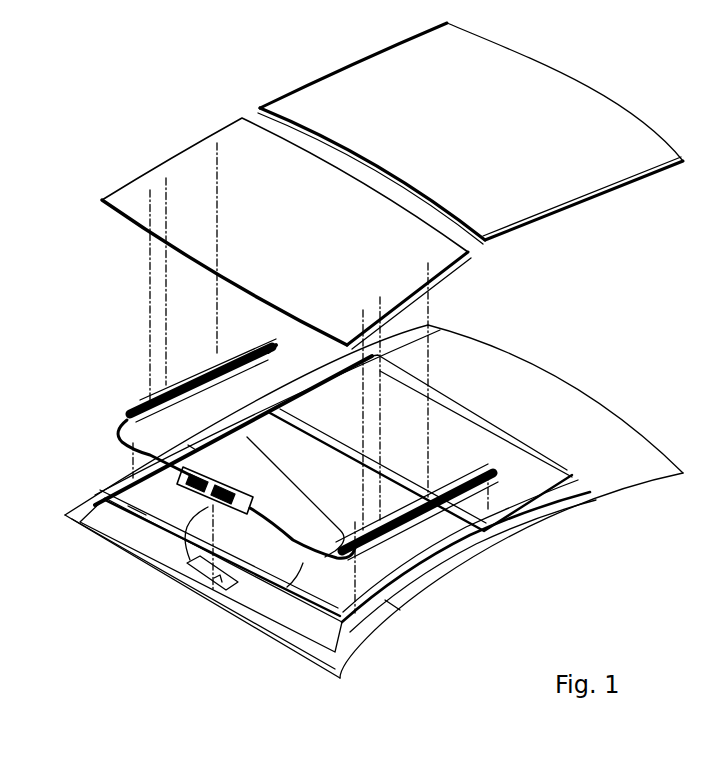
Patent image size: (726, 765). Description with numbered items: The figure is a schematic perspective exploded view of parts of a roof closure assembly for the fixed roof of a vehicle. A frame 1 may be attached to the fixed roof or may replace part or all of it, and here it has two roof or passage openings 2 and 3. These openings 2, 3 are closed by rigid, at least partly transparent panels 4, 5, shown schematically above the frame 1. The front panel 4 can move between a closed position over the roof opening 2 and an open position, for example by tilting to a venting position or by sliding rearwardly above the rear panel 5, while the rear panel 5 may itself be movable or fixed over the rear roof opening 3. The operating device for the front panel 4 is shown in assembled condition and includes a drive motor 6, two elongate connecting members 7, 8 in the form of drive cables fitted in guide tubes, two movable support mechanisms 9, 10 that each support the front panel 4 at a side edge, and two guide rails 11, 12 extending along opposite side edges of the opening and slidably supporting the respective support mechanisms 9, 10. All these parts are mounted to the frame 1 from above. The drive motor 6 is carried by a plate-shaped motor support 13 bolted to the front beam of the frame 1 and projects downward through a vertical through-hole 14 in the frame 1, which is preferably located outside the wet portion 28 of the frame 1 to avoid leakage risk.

The frame 1 is at (556, 515).
The roof opening 2 is at (285, 505).
The roof opening 3 is at (465, 458).
The front panel 4 is at (294, 234).
The rear panel 5 is at (485, 139).
The drive motor 6 is at (203, 517).
The connecting member 7 is at (118, 452).
The connecting member 8 is at (262, 578).
The movable support mechanism 9 is at (124, 390).
The movable support mechanism 10 is at (442, 522).
The guide rail 11 is at (262, 348).
The guide rail 12 is at (393, 604).
The motor support 13 is at (137, 509).
The vertical through-hole 14 is at (216, 577).
The wet portion 28 is at (192, 447).